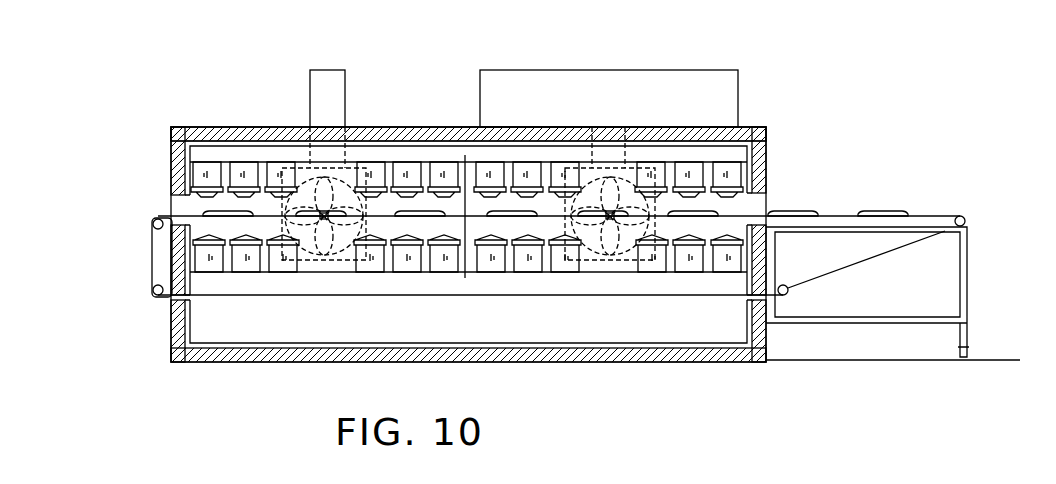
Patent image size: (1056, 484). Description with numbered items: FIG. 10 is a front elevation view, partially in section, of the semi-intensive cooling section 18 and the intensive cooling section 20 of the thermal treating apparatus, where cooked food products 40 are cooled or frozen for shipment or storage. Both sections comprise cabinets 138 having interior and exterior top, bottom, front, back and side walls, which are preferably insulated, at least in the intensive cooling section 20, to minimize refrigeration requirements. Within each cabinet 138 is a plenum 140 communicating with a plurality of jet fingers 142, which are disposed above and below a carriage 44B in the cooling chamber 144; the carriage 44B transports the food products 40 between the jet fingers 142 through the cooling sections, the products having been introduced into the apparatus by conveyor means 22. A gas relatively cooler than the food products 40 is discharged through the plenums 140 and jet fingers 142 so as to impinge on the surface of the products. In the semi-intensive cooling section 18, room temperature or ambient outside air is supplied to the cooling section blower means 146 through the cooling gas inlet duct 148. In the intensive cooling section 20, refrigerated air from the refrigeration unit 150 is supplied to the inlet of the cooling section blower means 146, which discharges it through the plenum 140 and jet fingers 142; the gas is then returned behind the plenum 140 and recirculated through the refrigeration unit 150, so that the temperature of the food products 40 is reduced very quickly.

The semi-intensive cooling section 18 is at (166, 108).
The intensive cooling section 20 is at (782, 108).
The conveyor means 22 is at (974, 214).
The food products 40 is at (785, 215).
The carriage 44B is at (152, 258).
The cabinet 138 is at (768, 163).
The plenum 140 is at (229, 263).
The jet fingers 142 is at (492, 176).
The cooling chamber 144 is at (242, 153).
The cooling section blower means 146 is at (347, 203).
The cooling gas inlet duct 148 is at (315, 91).
The refrigeration unit 150 is at (725, 92).